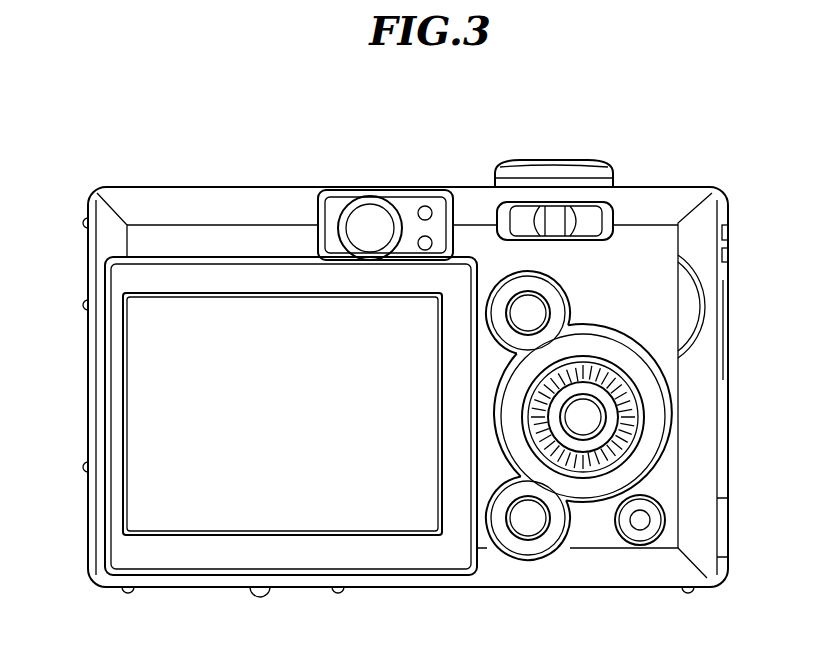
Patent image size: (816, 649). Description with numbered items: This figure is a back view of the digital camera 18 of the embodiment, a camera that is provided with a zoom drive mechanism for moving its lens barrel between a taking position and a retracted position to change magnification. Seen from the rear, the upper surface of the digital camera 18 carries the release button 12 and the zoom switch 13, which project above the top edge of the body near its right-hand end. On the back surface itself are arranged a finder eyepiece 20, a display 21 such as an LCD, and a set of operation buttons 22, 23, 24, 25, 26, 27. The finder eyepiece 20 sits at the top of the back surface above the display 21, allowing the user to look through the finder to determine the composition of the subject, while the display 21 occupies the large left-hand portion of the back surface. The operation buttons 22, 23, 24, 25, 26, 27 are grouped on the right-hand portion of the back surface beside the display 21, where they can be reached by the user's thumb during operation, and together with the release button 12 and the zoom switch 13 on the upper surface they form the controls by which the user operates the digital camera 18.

The release button 12 is at (551, 160).
The zoom switch 13 is at (600, 178).
The digital camera 18 is at (208, 200).
The finder eyepiece 20 is at (370, 213).
The display 21 is at (356, 520).
The operation button 22 is at (585, 213).
The operation button 23 is at (538, 308).
The operation button 24 is at (587, 422).
The operation button 25 is at (527, 525).
The operation button 26 is at (640, 528).
The operation button 27 is at (630, 440).